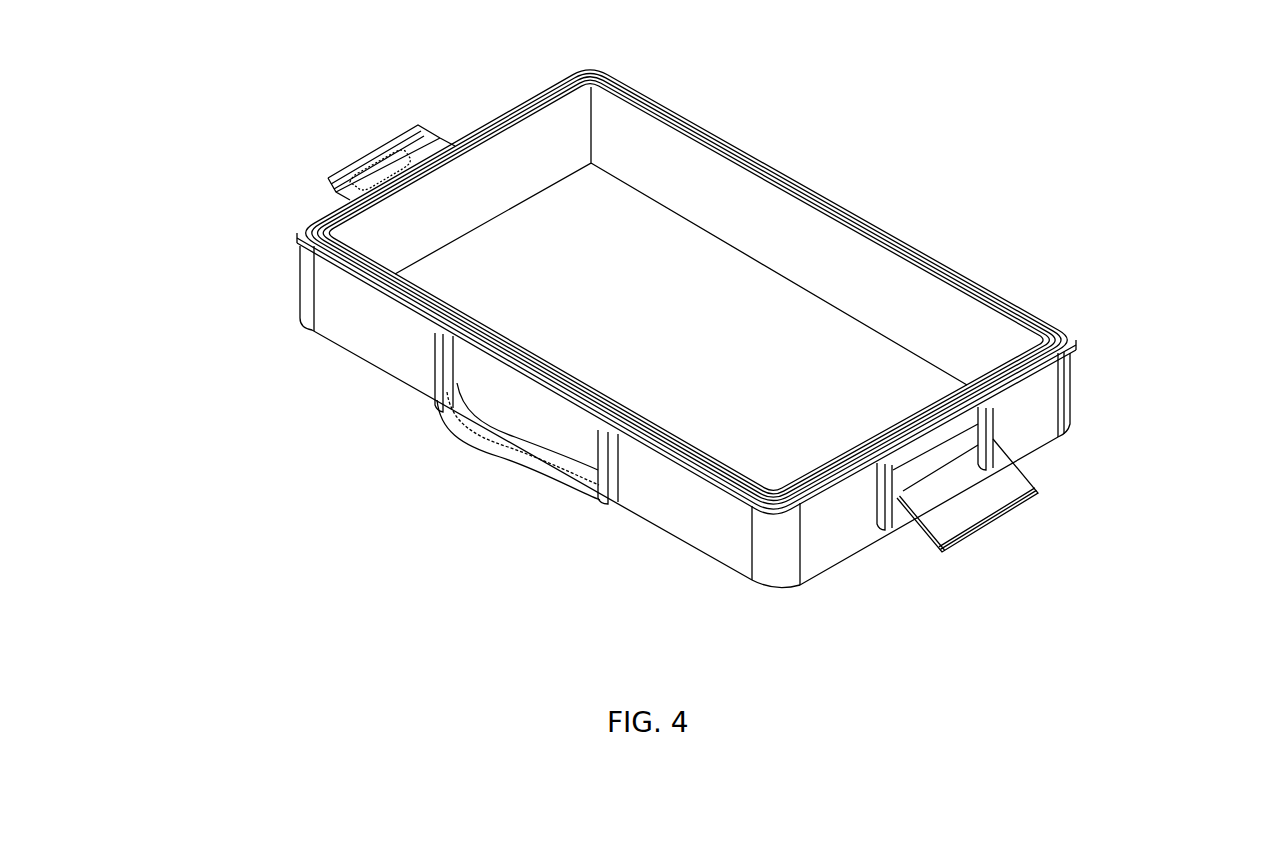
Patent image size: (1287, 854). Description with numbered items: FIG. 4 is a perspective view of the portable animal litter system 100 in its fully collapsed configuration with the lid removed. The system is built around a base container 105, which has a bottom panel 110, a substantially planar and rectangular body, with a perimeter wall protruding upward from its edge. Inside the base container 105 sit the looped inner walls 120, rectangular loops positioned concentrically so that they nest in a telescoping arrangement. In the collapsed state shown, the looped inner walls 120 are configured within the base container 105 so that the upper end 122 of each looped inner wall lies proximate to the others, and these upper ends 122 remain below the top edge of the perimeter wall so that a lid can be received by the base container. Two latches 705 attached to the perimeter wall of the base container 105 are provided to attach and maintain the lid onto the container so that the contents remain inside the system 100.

The portable animal litter system 100 is at (143, 135).
The base container 105 is at (1067, 400).
The bottom panel 110 is at (758, 300).
The looped inner walls 120 is at (930, 303).
The upper end 122 is at (1015, 302).
The latches 705 is at (372, 147).